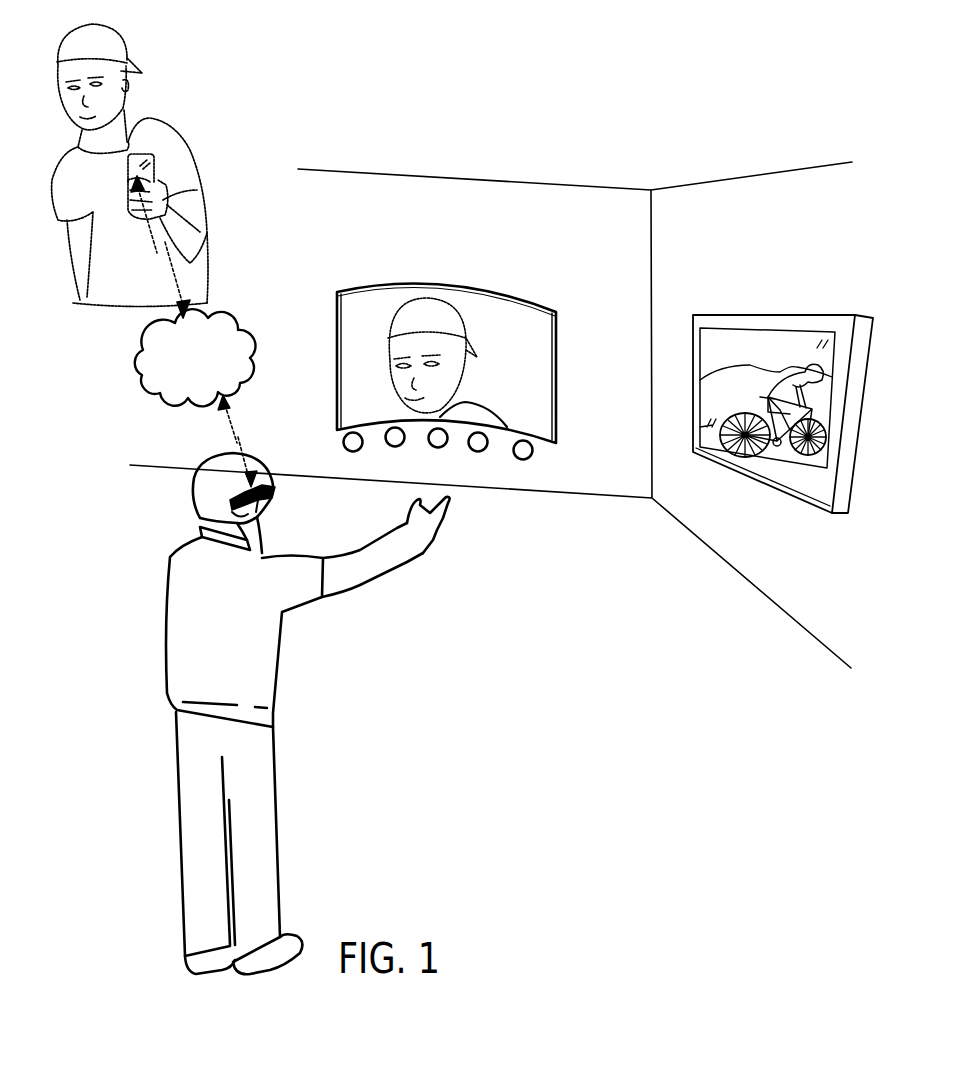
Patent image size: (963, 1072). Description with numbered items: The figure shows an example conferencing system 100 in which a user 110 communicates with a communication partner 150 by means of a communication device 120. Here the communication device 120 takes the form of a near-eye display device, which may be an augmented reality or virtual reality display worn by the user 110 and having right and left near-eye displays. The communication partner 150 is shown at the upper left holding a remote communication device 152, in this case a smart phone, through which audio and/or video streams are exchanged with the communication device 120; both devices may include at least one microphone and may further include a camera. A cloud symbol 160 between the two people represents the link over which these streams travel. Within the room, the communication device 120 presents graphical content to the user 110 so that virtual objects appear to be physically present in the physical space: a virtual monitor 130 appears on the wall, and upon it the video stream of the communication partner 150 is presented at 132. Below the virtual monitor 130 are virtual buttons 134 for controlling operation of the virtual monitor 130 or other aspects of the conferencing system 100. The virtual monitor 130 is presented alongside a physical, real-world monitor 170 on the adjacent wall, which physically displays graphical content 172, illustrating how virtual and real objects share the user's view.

The conferencing system 100 is at (393, 866).
The user 110 is at (182, 573).
The communication device 120 is at (269, 502).
The virtual monitor 130 is at (513, 294).
The video stream of communication partner 132 is at (523, 332).
The virtual buttons 134 is at (546, 457).
The communication partner 150 is at (153, 125).
The remote communication device 152 is at (147, 155).
The network cloud 160 is at (208, 368).
The real-world monitor 170 is at (781, 323).
The graphical content 172 is at (743, 357).